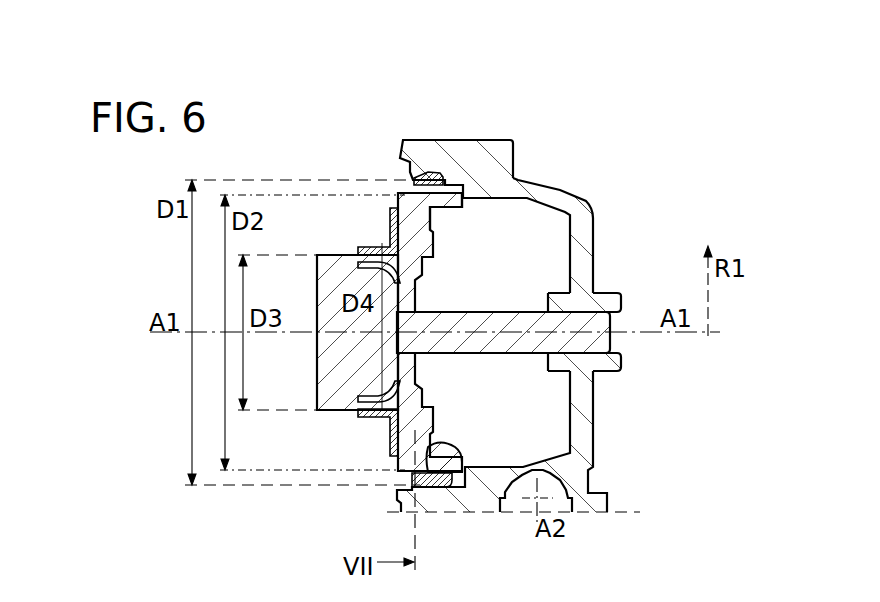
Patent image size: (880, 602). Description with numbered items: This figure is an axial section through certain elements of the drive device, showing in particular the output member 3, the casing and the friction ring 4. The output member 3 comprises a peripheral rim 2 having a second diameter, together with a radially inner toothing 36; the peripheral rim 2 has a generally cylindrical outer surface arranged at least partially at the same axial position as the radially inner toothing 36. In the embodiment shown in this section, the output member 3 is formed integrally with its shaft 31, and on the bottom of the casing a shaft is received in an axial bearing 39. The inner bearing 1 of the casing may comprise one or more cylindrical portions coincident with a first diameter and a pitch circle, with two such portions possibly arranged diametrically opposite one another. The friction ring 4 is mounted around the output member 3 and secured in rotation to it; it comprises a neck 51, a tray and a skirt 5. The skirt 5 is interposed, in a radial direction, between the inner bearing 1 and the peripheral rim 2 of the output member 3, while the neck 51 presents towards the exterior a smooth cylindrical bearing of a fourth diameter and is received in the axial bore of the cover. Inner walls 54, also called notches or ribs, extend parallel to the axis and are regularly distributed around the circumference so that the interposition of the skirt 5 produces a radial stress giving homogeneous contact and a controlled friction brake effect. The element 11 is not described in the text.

The inner bearing 1 is at (445, 180).
The peripheral rim 2 is at (405, 190).
The output member 3 is at (307, 293).
The friction ring 4 is at (347, 425).
The skirt 5 is at (430, 178).
The housing wall 11 is at (540, 180).
The shaft 31 is at (490, 310).
The radially inner toothing 36 is at (440, 207).
The axial bearing 39 is at (600, 302).
The neck 51 is at (382, 250).
The inner walls 54 is at (447, 446).